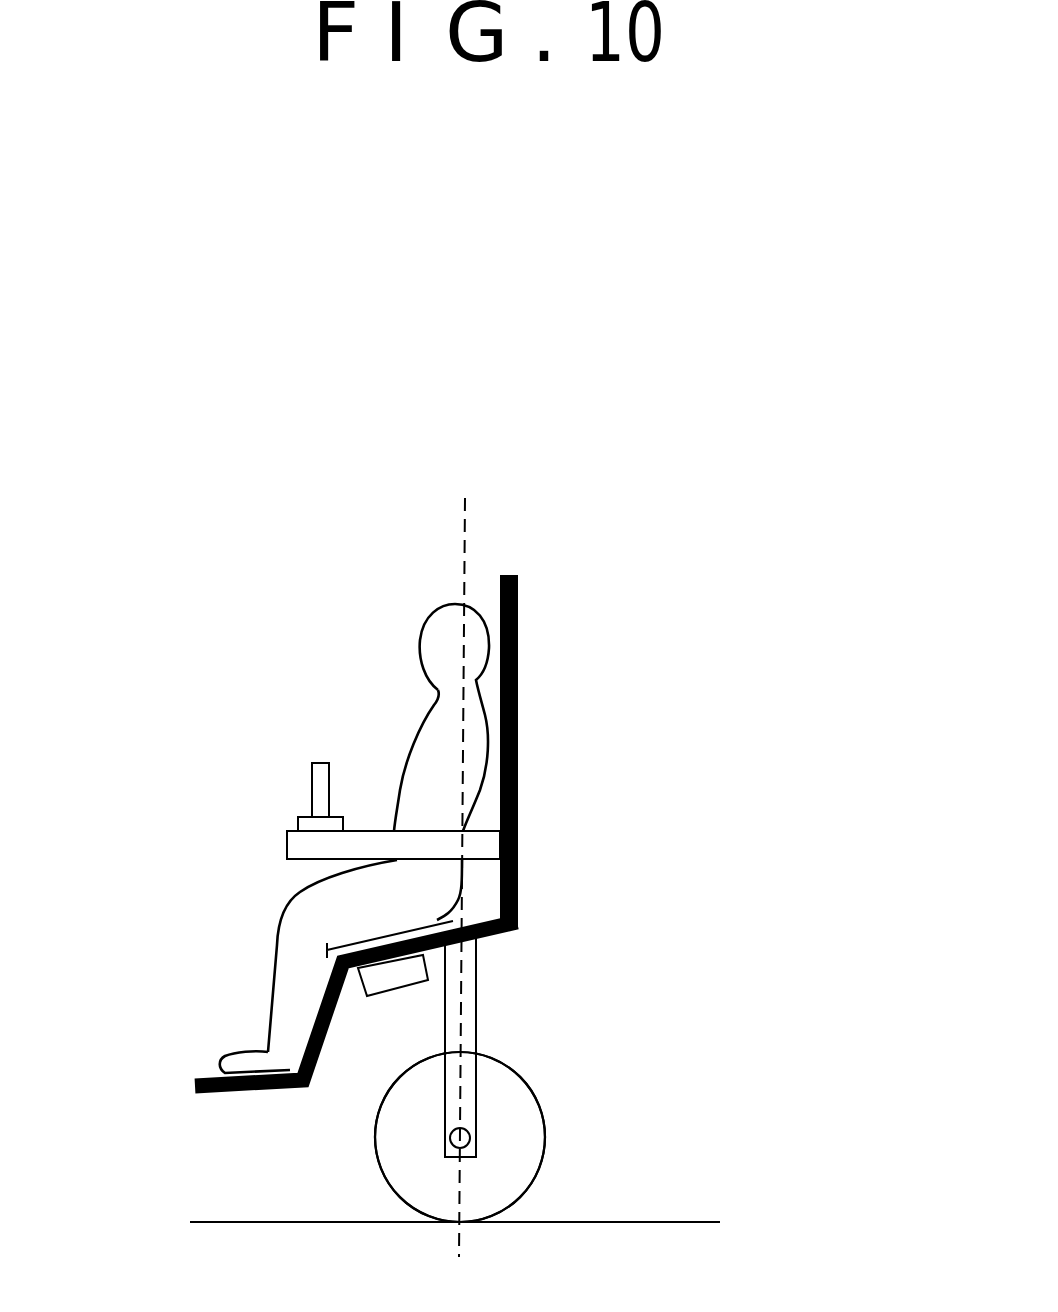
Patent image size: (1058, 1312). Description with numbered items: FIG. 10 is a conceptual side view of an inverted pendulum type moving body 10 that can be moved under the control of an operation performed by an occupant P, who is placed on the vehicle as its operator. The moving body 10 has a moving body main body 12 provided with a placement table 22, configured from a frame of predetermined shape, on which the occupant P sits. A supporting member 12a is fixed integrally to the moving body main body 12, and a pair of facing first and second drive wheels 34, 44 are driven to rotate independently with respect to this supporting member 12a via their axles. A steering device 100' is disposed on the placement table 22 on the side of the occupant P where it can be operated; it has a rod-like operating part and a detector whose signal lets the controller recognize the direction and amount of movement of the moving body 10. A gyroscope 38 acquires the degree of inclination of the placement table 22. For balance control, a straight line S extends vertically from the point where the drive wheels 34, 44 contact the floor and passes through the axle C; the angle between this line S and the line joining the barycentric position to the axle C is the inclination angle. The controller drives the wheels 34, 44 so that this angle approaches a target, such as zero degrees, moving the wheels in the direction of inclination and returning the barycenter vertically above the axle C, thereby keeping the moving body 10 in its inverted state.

The inverted pendulum type moving body 10 is at (808, 477).
The moving body main body 12 is at (477, 830).
The supporting member 12a is at (477, 1020).
The placement table 22 is at (518, 816).
The first drive wheel 34 is at (528, 1078).
The second drive wheel 44 is at (460, 1137).
The gyroscope 38 is at (388, 983).
The steering device 100' is at (287, 803).
The occupant P is at (392, 670).
The straight line S is at (460, 844).
The axle C is at (475, 1120).